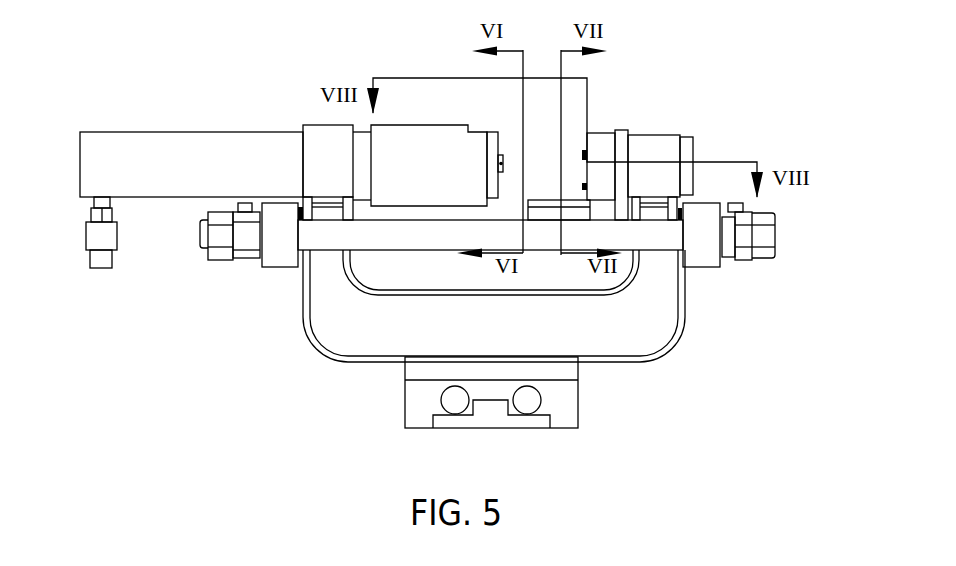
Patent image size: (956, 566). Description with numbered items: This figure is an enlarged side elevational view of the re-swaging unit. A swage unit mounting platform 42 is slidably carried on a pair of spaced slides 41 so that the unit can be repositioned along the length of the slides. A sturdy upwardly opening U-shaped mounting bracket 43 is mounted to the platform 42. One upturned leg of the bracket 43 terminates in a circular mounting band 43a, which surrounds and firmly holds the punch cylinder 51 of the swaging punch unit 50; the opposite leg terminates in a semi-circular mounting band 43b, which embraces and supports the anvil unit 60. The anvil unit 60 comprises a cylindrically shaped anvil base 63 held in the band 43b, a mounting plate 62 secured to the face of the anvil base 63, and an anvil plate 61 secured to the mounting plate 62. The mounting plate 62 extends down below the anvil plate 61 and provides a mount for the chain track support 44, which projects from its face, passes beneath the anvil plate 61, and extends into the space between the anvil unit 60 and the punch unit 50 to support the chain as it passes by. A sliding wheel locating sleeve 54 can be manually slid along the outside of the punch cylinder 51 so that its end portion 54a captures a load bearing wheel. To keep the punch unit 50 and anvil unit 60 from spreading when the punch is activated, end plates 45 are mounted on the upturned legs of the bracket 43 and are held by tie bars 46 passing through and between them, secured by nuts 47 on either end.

The slides 41 is at (448, 402).
The swage unit mounting platform 42 is at (413, 392).
The mounting bracket 43 is at (500, 336).
The circular mounting band 43a is at (315, 140).
The semi-circular mounting band 43b is at (670, 186).
The track support 44 is at (545, 202).
The end plates 45 is at (277, 257).
The tie bars 46 is at (395, 246).
The nuts 47 is at (215, 247).
The swaging punch unit 50 is at (191, 173).
The punch cylinder 51 is at (246, 178).
The wheel locating sleeve 54 is at (428, 126).
The end portion of capture sleeve 54a is at (475, 158).
The anvil unit 60 is at (663, 142).
The anvil plate 61 is at (600, 138).
The mounting plate 62 is at (623, 128).
The anvil base 63 is at (688, 148).